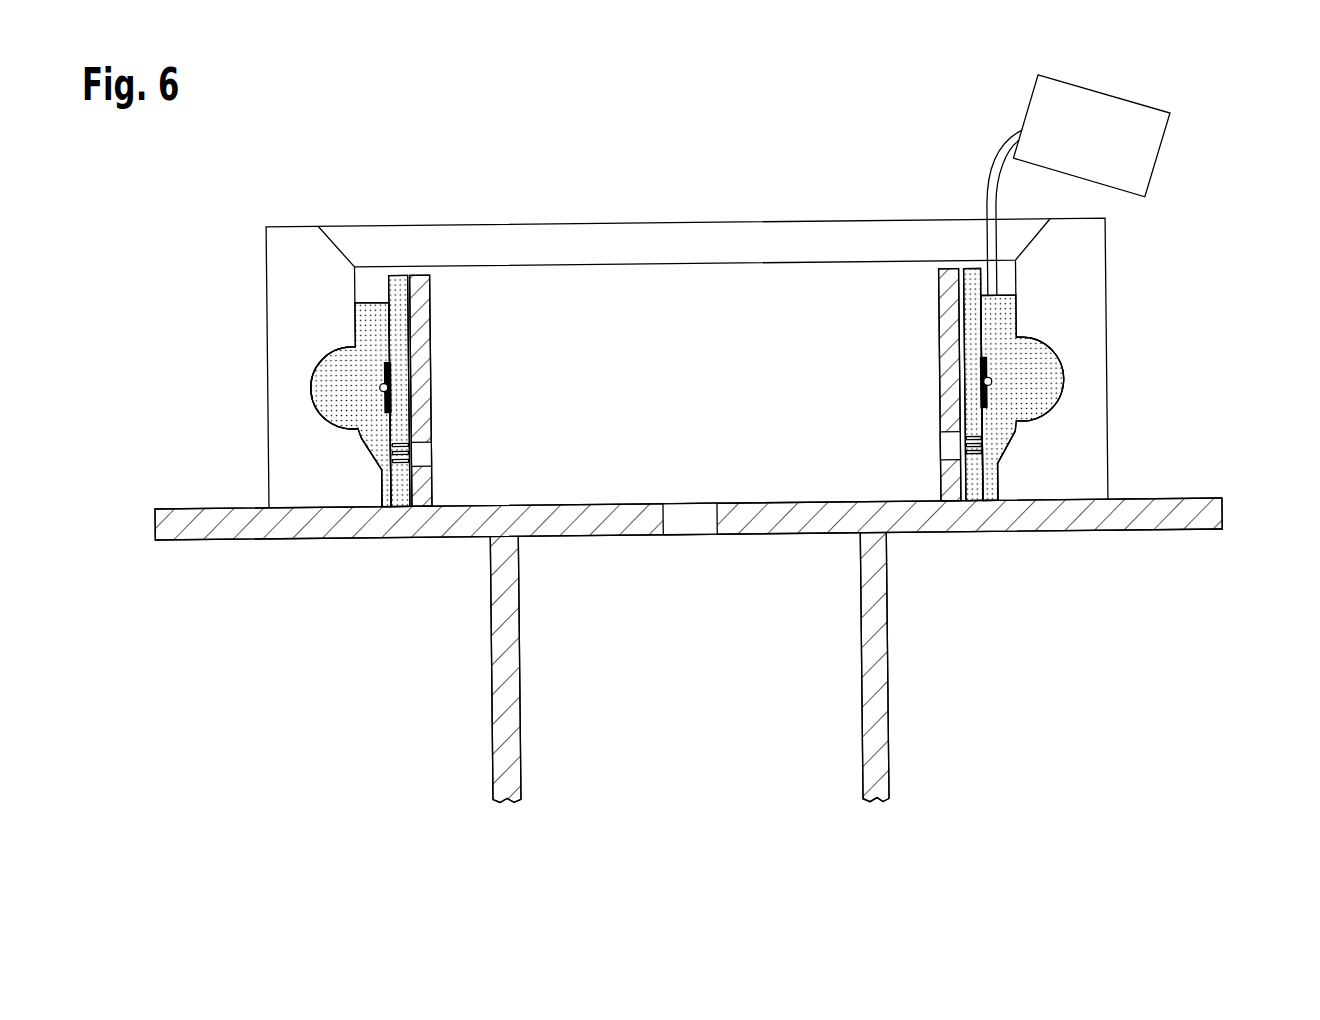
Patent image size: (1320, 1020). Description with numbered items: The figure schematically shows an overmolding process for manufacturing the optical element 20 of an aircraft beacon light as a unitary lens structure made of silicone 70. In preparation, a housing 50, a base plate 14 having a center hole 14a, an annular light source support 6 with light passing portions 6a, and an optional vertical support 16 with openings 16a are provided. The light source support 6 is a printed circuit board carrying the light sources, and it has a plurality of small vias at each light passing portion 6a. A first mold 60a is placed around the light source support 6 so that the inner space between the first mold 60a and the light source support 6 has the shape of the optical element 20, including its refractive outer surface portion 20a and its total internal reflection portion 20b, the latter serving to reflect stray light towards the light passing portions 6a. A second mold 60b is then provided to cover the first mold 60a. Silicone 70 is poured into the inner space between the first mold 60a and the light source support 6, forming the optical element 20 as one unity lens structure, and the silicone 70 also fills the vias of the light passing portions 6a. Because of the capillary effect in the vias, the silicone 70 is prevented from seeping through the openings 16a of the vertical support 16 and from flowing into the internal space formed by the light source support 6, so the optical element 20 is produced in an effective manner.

The light source support 6 is at (404, 282).
The light passing portions 6a is at (410, 448).
The vertical support 16 is at (420, 283).
The openings 16a is at (424, 461).
The optical element 20 is at (328, 394).
The refractive outer surface portion 20a is at (328, 364).
The total internal reflection portion 20b is at (365, 449).
The base plate 14 is at (1208, 526).
The center hole 14a is at (703, 533).
The housing 50 is at (466, 710).
The first mold 60a is at (279, 290).
The second mold 60b is at (486, 253).
The silicone 70 is at (1164, 173).